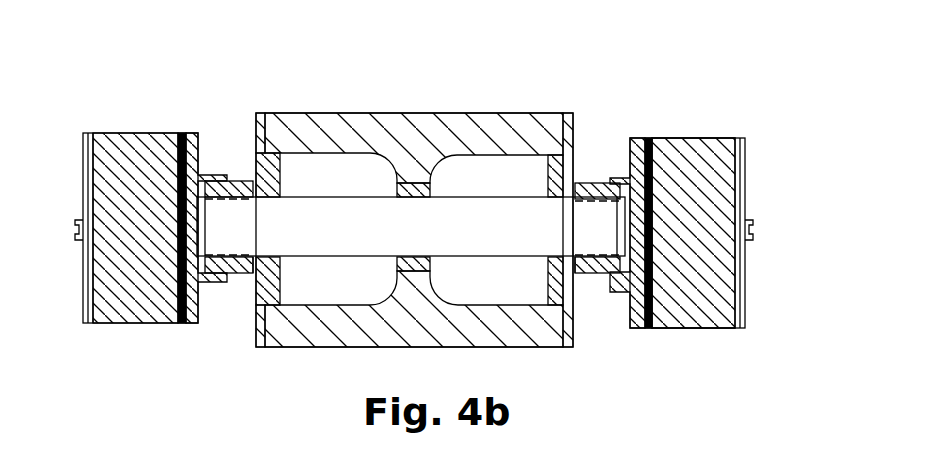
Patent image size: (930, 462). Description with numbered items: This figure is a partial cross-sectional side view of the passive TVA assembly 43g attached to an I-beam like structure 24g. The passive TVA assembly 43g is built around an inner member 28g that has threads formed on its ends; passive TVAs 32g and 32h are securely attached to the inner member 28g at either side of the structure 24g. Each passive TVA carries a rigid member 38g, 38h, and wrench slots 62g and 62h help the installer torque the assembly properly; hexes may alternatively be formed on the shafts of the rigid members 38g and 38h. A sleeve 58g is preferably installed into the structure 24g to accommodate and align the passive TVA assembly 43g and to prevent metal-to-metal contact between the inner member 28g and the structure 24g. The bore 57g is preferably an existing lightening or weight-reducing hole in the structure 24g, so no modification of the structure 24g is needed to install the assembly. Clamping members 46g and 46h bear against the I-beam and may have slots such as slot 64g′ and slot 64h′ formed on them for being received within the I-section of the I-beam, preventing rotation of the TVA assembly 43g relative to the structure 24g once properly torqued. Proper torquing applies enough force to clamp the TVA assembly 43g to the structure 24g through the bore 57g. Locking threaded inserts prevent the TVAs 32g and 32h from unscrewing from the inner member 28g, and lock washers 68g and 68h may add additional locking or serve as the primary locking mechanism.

The passive TVA 32g is at (134, 125).
The rigid member 38g is at (188, 133).
The wrench slot 62g is at (217, 180).
The clamping member 46g is at (258, 113).
The slot 64g′ is at (287, 342).
The I-beam like structure 24g is at (342, 113).
The inner member 28g is at (349, 243).
The sleeve 58g is at (435, 190).
The bore 57g is at (437, 258).
The slot 64h′ is at (547, 332).
The clamping member 46h is at (568, 130).
The wrench slot 62h is at (597, 183).
The rigid member 38h is at (650, 135).
The passive TVA 32h is at (704, 126).
The passive TVA assembly 43g is at (702, 216).
The lock washer 68g is at (250, 275).
The lock washer 68h is at (578, 280).